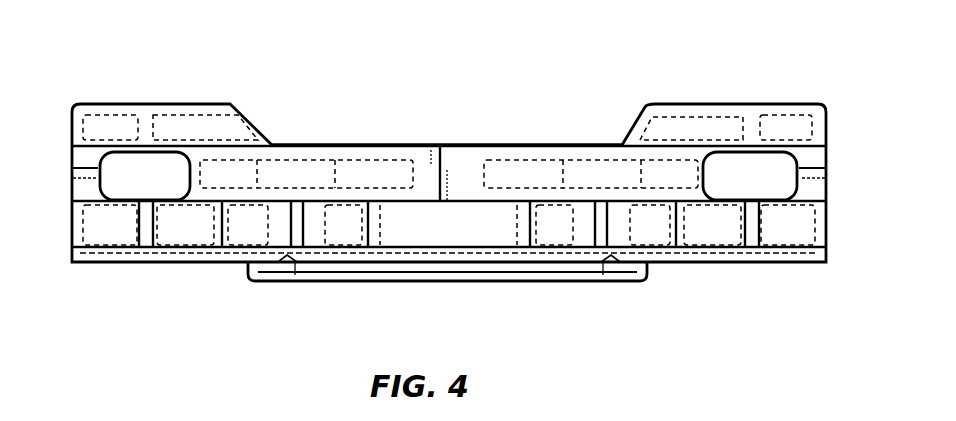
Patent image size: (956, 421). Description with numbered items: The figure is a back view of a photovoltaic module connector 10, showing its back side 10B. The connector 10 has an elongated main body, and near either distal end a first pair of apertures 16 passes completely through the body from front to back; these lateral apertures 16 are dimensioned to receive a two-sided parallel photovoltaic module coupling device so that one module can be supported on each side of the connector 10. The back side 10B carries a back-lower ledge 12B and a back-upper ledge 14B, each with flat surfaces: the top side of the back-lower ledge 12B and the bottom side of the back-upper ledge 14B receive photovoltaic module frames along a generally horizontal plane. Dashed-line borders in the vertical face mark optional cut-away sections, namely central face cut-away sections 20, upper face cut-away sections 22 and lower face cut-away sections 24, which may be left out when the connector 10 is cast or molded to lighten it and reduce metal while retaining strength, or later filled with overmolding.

The connector 10 is at (574, 45).
The back side 10B is at (231, 104).
The back-lower ledge 12B is at (560, 267).
The back-upper ledge 14B is at (468, 153).
The first pair of apertures 16 is at (158, 188).
The central face cut-away sections 20 is at (363, 173).
The upper face cut-away sections 22 is at (102, 127).
The lower face cut-away sections 24 is at (112, 228).